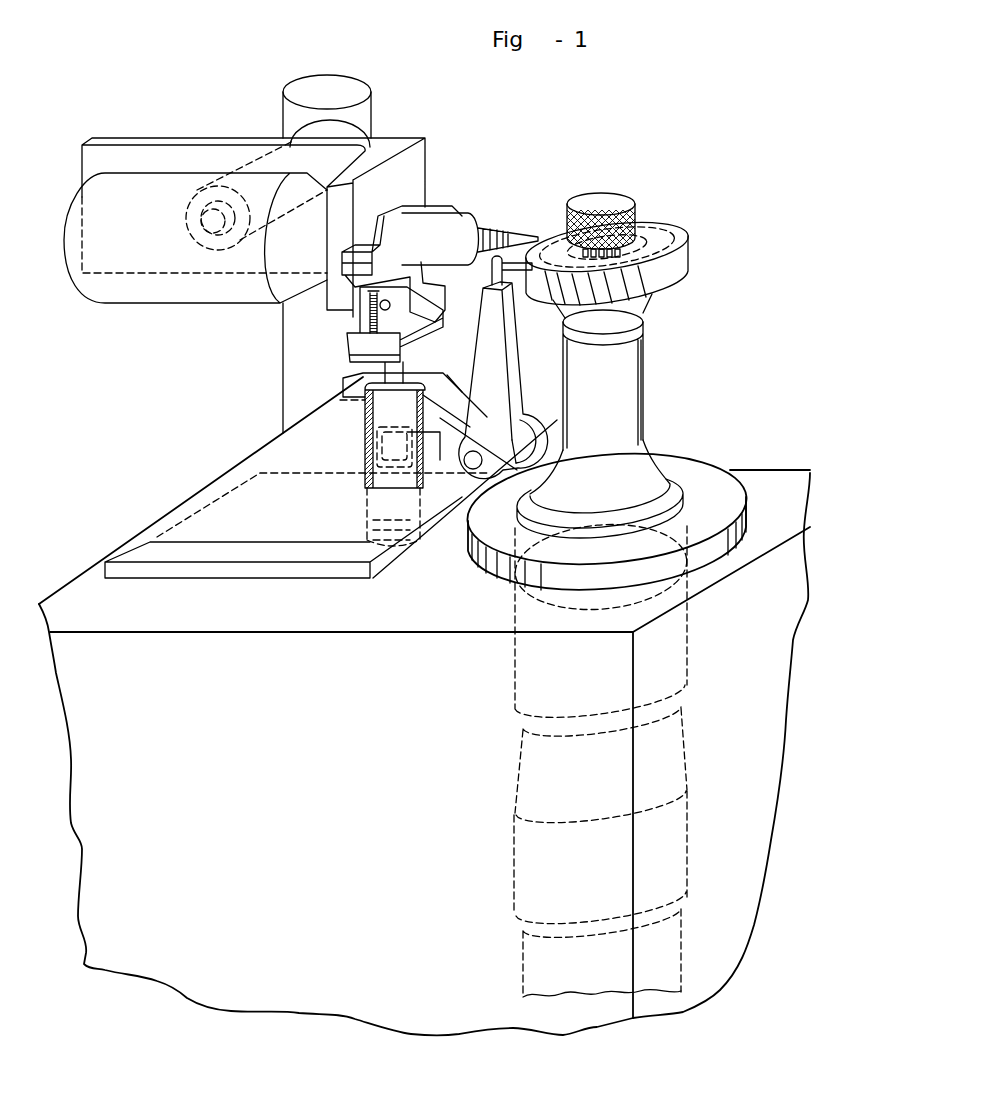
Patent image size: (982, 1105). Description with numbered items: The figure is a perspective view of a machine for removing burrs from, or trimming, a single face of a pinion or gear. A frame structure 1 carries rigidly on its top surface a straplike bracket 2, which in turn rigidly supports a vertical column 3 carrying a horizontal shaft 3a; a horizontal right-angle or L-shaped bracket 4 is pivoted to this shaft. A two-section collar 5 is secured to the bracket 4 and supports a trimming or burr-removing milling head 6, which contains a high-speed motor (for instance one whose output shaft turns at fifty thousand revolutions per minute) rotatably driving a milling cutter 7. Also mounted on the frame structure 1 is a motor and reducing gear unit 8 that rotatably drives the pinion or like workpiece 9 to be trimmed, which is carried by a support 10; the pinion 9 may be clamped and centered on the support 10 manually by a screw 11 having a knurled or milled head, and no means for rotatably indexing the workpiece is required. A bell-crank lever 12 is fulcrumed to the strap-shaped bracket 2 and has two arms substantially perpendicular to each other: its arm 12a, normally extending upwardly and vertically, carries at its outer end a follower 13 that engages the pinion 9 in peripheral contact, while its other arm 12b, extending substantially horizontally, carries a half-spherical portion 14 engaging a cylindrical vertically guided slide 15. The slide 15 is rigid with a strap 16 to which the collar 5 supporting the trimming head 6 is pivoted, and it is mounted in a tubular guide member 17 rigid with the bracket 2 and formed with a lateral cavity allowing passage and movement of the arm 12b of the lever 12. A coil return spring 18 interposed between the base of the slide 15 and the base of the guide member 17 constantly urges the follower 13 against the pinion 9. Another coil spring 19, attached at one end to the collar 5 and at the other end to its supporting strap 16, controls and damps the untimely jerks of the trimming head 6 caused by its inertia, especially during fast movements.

The frame structure 1 is at (92, 601).
The straplike bracket 2 is at (217, 480).
The vertical column 3 is at (286, 371).
The horizontal shaft 3a is at (307, 133).
The L-shaped bracket 4 is at (387, 145).
The two-section collar 5 is at (412, 196).
The milling head 6 is at (245, 305).
The milling cutter 7 is at (518, 228).
The motor and reducing gear unit 8 is at (687, 790).
The pinion 9 is at (687, 220).
The support 10 is at (648, 420).
The screw 11 is at (633, 195).
The bell-crank lever 12 is at (515, 388).
The arm 12a is at (493, 408).
The arm 12b is at (427, 453).
The follower 13 is at (517, 265).
The half-spherical portion 14 is at (378, 450).
The cylindrical slide 15 is at (377, 412).
The strap 16 is at (393, 317).
The tubular guide member 17 is at (367, 433).
The coil return spring 18 is at (373, 527).
The coil spring 19 is at (363, 317).